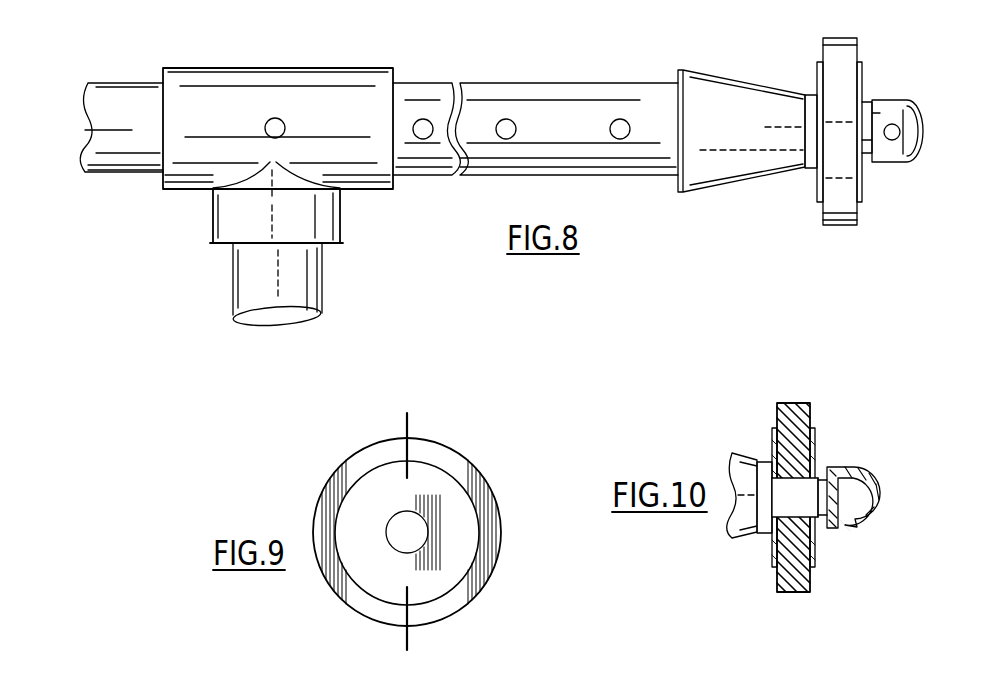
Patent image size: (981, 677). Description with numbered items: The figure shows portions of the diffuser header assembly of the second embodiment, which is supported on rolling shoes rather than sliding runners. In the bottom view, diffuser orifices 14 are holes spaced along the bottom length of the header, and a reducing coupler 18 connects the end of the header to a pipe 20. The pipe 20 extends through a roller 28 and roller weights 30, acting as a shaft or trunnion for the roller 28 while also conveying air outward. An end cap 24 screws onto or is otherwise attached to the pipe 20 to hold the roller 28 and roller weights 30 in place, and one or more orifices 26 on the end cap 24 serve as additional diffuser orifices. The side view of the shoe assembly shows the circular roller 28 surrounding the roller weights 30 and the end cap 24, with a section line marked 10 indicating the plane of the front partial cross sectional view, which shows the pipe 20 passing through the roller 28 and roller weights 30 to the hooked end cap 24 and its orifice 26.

In FIG. 9, the section line / view indicator for FIG. 10 is at (419, 640).
In FIG. 8, the diffuser orifices 14 is at (284, 126).
In FIG. 8, the reducing coupler 18 is at (751, 145).
In FIG. 8, the pipe 20 is at (867, 158).
In FIG. 10, the pipe 20 is at (807, 508).
In FIG. 8, the end cap 24 is at (880, 112).
In FIG. 9, the end cap 24 is at (420, 542).
In FIG. 10, the end cap 24 is at (867, 480).
In FIG. 8, the end cap orifice 26 is at (899, 140).
In FIG. 10, the end cap orifice 26 is at (851, 534).
In FIG. 8, the roller 28 is at (836, 50).
In FIG. 9, the roller 28 is at (345, 477).
In FIG. 10, the roller 28 is at (797, 412).
In FIG. 8, the roller weights 30 is at (818, 68).
In FIG. 9, the roller weights 30 is at (389, 575).
In FIG. 10, the roller weights 30 is at (815, 437).